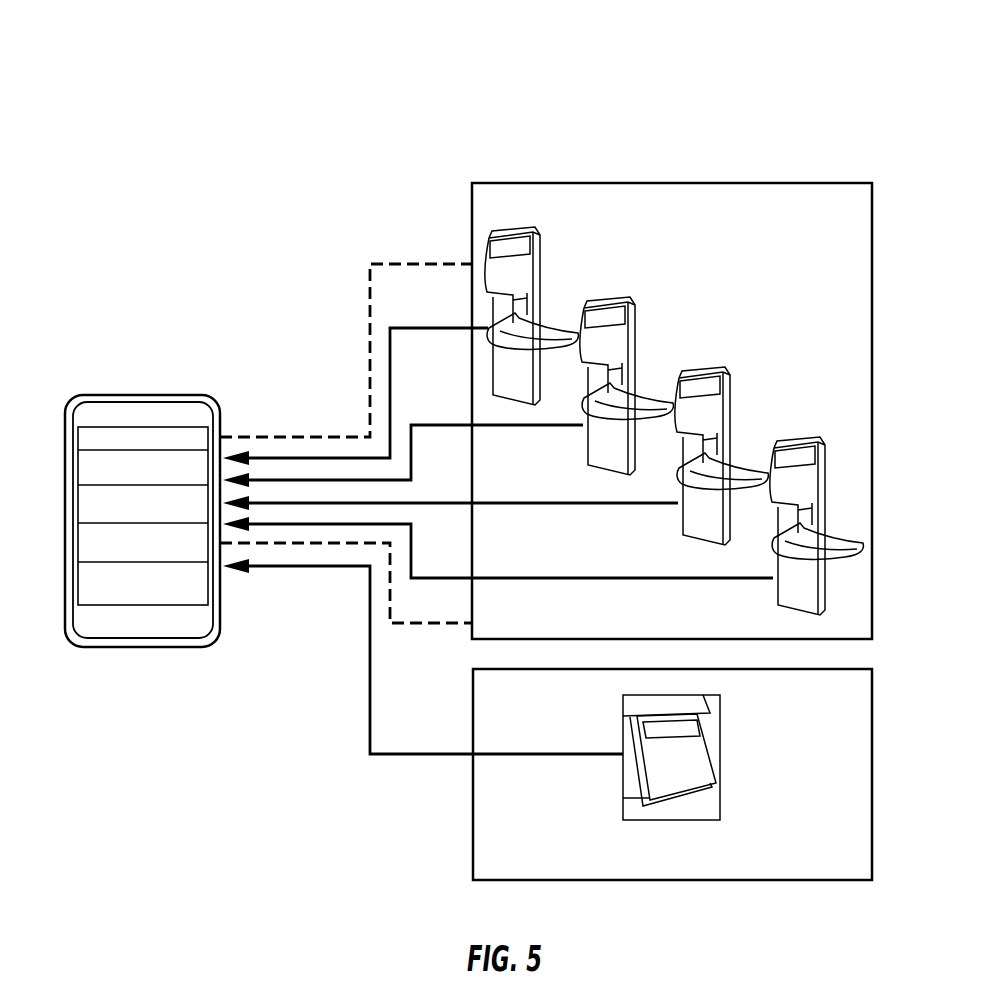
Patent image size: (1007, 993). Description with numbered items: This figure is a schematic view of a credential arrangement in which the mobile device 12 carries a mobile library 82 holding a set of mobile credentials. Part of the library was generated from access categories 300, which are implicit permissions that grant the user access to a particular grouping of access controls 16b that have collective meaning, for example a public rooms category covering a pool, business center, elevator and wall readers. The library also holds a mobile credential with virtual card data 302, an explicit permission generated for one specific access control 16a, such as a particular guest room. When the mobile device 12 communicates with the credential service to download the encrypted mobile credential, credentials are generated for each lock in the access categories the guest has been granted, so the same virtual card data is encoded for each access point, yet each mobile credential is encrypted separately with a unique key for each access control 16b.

The mobile device 12 is at (74, 349).
The mobile library 82 is at (150, 395).
The access categories 300 is at (488, 126).
The mobile credential with virtual card data 302 is at (368, 807).
The grouping of access controls 16b is at (825, 280).
The specific access control 16a is at (825, 770).